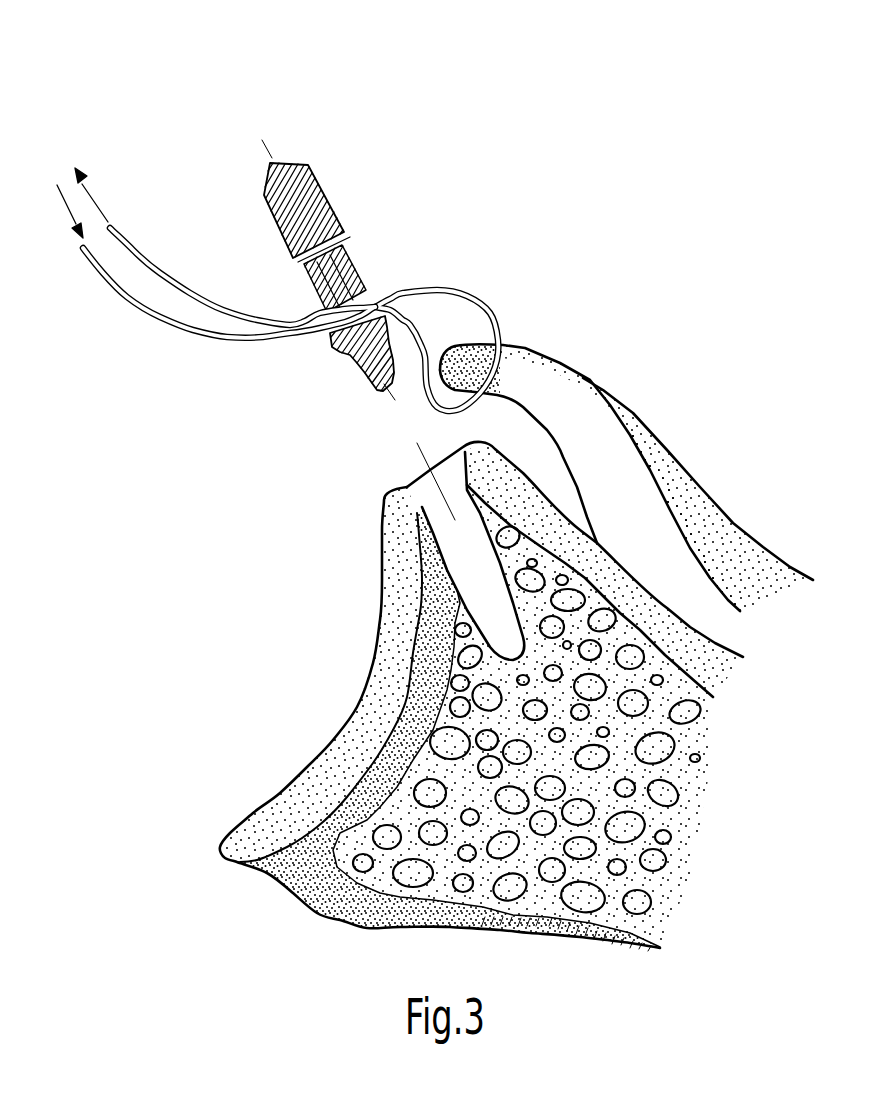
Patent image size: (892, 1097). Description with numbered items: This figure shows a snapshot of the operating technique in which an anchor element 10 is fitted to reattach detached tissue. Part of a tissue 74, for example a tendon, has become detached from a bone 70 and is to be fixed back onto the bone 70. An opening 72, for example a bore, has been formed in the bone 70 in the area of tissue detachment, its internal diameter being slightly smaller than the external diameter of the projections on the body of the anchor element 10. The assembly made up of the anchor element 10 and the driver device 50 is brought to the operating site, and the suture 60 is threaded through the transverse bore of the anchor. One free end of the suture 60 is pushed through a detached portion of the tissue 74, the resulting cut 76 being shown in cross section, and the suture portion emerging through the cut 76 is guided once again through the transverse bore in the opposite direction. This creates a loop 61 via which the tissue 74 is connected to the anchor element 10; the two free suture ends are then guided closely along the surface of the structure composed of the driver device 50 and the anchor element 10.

The anchor element 10 is at (415, 254).
The driver device 50 is at (337, 150).
The suture 60 is at (152, 320).
The loop 61 is at (468, 298).
The bone 70 is at (457, 620).
The opening 72 is at (421, 520).
The tissue 74 is at (584, 416).
The cut 76 is at (507, 343).